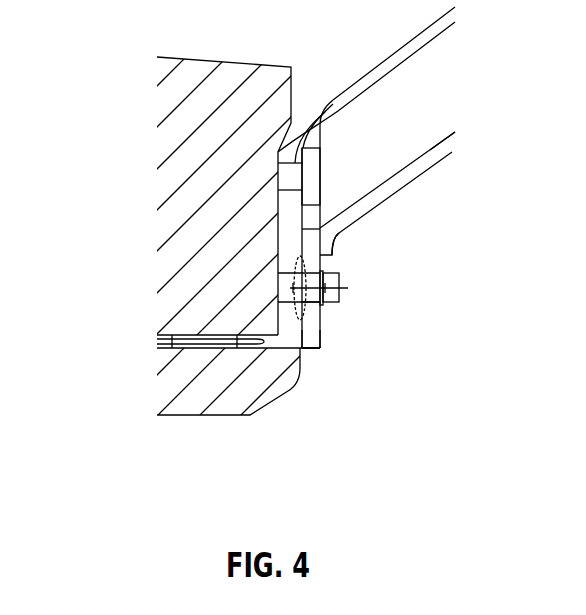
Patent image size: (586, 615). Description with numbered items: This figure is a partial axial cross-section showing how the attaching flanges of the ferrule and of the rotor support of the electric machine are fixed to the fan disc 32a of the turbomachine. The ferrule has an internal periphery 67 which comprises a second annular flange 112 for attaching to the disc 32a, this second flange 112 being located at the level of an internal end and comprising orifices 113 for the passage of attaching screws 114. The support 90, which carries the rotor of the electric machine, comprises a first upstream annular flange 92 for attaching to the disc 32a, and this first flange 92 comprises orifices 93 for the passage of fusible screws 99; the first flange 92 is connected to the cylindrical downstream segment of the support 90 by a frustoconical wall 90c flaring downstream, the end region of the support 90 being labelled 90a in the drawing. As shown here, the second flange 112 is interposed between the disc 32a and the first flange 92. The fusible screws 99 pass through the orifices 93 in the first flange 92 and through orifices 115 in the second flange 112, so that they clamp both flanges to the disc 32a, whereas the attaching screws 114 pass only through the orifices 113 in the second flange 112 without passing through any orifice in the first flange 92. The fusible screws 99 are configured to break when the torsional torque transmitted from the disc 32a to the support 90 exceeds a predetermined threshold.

The disc 32a is at (178, 305).
The internal periphery 67 is at (432, 39).
The support 90 is at (407, 185).
The first end of bracket 90a is at (312, 341).
The frustoconical wall 90c is at (452, 152).
The first upstream annular flange 92 is at (332, 243).
The orifices 93 is at (313, 305).
The fusible screws 99 is at (340, 280).
The second annular flange 112 is at (290, 122).
The orifices 113 is at (331, 102).
The attaching screws 114 is at (316, 170).
The orifices 115 is at (286, 303).